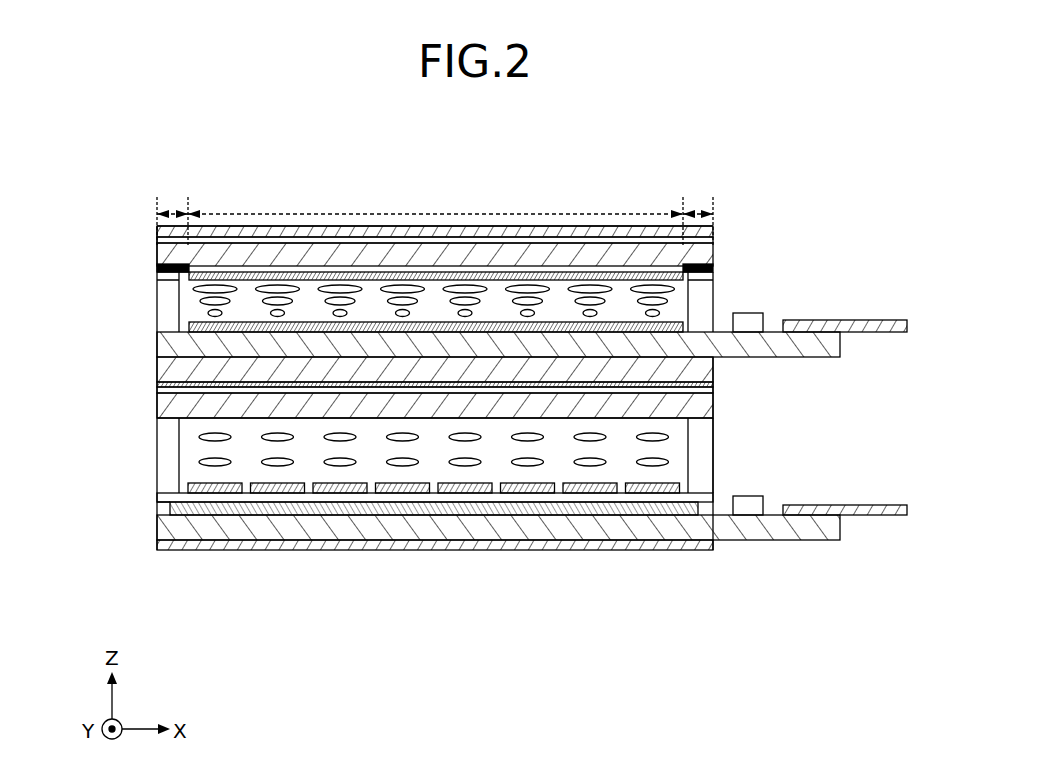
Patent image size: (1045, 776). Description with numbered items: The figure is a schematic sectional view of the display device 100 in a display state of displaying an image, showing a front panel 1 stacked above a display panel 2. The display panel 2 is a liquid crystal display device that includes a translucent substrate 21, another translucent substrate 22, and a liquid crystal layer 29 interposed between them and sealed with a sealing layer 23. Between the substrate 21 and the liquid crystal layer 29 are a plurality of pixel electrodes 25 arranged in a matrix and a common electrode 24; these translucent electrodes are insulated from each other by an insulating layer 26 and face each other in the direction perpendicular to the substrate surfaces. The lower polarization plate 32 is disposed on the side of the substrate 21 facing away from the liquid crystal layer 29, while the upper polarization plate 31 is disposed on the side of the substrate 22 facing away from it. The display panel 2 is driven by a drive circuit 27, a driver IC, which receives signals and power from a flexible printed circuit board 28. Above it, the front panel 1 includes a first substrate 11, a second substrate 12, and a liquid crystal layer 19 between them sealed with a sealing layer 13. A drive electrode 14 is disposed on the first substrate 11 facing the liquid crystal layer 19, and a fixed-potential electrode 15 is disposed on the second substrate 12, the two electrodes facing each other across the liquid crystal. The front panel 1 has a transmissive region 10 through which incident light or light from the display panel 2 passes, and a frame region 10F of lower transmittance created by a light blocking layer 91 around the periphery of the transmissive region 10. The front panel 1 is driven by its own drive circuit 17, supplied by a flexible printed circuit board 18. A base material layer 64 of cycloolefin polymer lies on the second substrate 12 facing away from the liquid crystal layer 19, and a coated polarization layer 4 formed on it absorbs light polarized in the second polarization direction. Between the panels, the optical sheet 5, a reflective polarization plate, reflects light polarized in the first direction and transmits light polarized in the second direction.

The display device 100 is at (268, 163).
The front panel 1 is at (801, 211).
The display panel 2 is at (801, 418).
The coated polarization layer 4 is at (293, 227).
The transmissive region 10 is at (388, 213).
The frame region 10F is at (172, 212).
The base material layer 64 is at (547, 240).
The light blocking layer 91 is at (157, 228).
The second substrate 12 is at (165, 255).
The fixed-potential electrode 15 is at (172, 283).
The liquid crystal layer 19 is at (180, 305).
The drive electrode 14 is at (178, 318).
The first substrate 11 is at (160, 343).
The optical sheet 5 is at (165, 352).
The sealing layer 13 is at (707, 283).
The drive circuit 17 is at (755, 325).
The flexible printed circuit board 18 is at (880, 325).
The upper polarization plate 31 is at (165, 370).
The substrate 22 is at (165, 405).
The liquid crystal layer 29 is at (192, 440).
The sealing layer 23 is at (707, 447).
The pixel electrodes 25 is at (185, 488).
The insulating layer 26 is at (165, 505).
The common electrode 24 is at (185, 512).
The substrate 21 is at (190, 528).
The lower polarization plate 32 is at (222, 547).
The drive circuit 27 is at (755, 508).
The flexible printed circuit board 28 is at (880, 510).